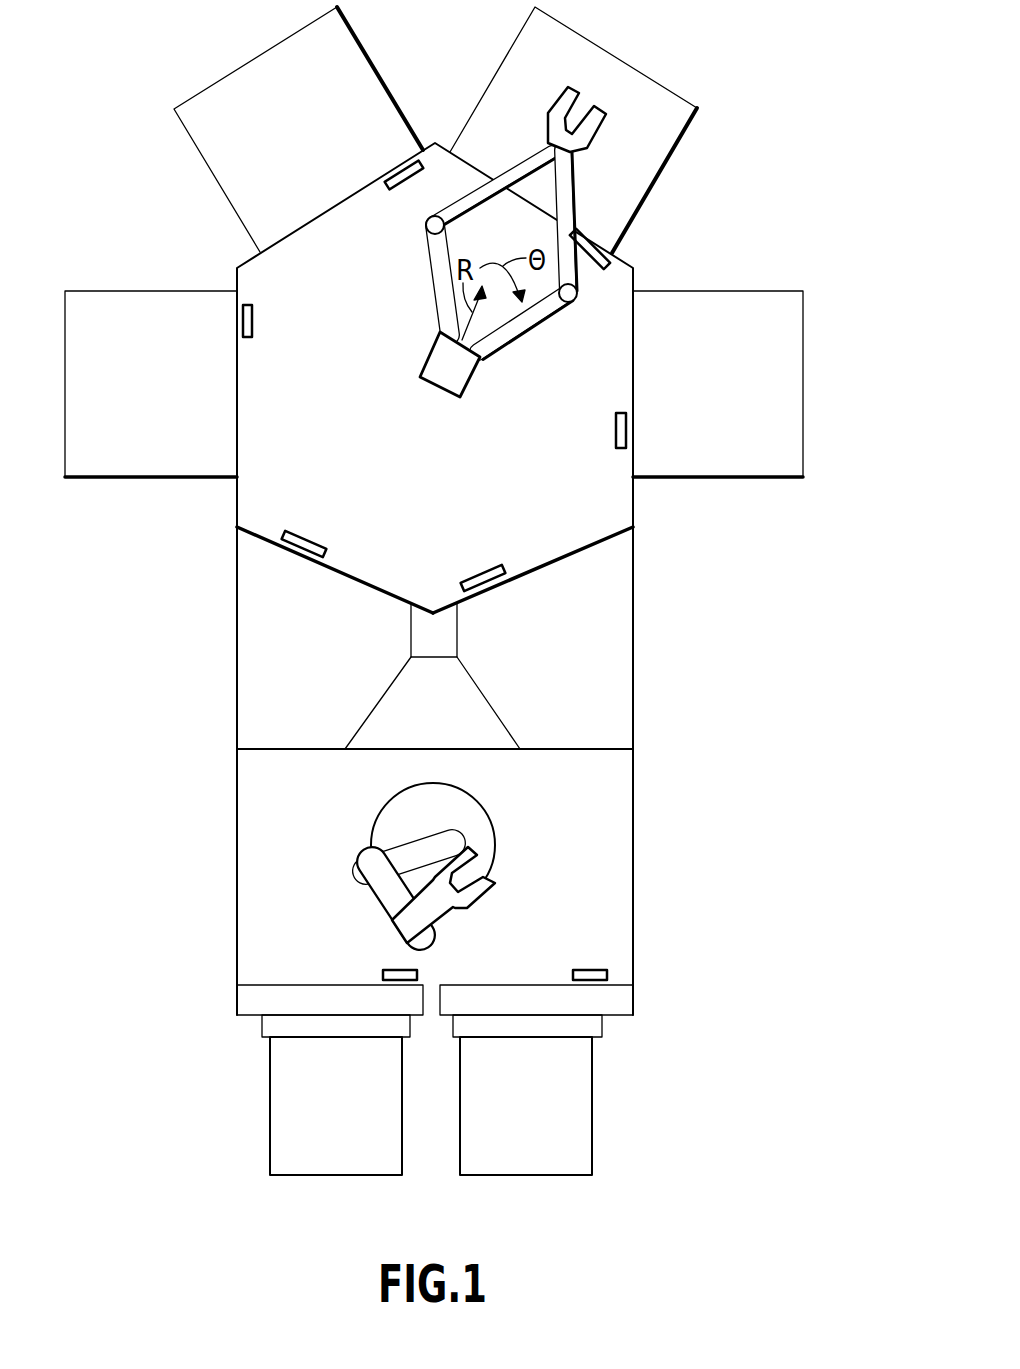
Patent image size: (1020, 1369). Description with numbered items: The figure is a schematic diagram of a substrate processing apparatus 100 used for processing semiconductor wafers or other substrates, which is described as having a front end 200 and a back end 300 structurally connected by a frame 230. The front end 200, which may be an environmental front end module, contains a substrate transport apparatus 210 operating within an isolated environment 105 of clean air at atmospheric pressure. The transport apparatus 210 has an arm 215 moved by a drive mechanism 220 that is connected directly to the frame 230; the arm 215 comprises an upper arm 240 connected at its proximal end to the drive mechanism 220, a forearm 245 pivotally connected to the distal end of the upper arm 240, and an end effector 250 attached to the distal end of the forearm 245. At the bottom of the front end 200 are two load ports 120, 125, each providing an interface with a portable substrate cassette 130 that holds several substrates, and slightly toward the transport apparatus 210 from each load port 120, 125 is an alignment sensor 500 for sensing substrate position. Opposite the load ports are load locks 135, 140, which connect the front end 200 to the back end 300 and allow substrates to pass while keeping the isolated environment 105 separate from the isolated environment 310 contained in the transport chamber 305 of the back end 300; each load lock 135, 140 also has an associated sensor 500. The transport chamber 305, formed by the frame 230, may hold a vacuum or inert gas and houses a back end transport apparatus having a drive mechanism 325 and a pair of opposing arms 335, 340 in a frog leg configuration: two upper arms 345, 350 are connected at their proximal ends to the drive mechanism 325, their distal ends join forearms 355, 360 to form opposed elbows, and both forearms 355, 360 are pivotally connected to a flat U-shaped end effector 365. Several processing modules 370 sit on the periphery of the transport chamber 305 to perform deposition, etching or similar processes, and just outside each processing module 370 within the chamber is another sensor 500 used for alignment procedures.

The substrate processing apparatus 100 is at (235, 593).
The isolated environment 105 is at (317, 795).
The load port 120 is at (235, 1013).
The load port 125 is at (633, 1013).
The substrate cassette 130 is at (480, 1176).
The load lock 135 is at (326, 661).
The load lock 140 is at (537, 645).
The front end 200 is at (235, 850).
The substrate transport apparatus 210 is at (345, 878).
The arm 215 is at (347, 860).
The drive mechanism 220 is at (478, 808).
The frame 230 is at (235, 740).
The upper arm 240 is at (407, 838).
The forearm 245 is at (367, 917).
The end effector 250 is at (487, 898).
The back end 300 is at (235, 495).
The transport chamber 305 is at (427, 565).
The isolated environment 310 is at (334, 482).
The drive mechanism 325 is at (424, 385).
The arm 335 is at (427, 302).
The arm 340 is at (575, 306).
The upper arm 345 is at (423, 248).
The upper arm 350 is at (500, 353).
The forearm 355 is at (475, 208).
The forearm 360 is at (578, 220).
The end effector 365 is at (557, 102).
The processing module 370 is at (278, 55).
The sensor 500 is at (390, 174).